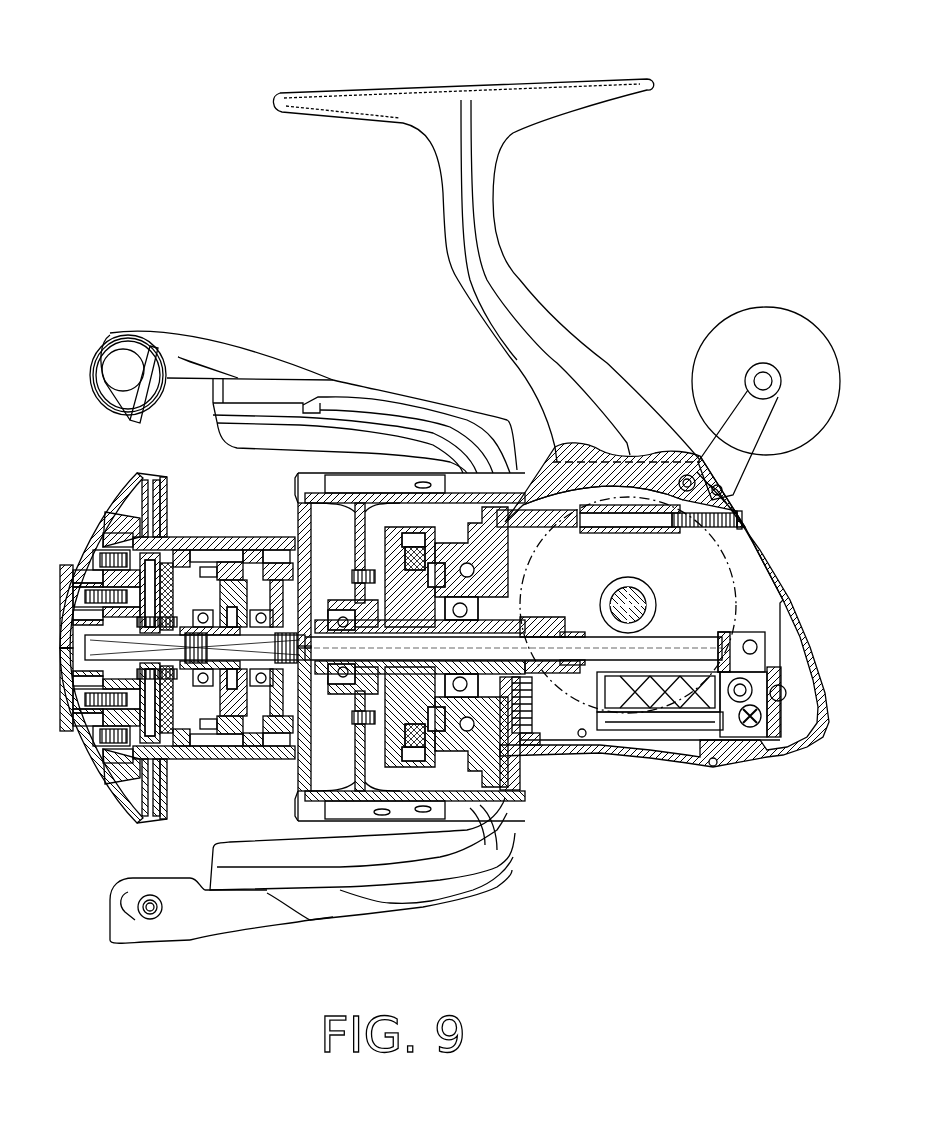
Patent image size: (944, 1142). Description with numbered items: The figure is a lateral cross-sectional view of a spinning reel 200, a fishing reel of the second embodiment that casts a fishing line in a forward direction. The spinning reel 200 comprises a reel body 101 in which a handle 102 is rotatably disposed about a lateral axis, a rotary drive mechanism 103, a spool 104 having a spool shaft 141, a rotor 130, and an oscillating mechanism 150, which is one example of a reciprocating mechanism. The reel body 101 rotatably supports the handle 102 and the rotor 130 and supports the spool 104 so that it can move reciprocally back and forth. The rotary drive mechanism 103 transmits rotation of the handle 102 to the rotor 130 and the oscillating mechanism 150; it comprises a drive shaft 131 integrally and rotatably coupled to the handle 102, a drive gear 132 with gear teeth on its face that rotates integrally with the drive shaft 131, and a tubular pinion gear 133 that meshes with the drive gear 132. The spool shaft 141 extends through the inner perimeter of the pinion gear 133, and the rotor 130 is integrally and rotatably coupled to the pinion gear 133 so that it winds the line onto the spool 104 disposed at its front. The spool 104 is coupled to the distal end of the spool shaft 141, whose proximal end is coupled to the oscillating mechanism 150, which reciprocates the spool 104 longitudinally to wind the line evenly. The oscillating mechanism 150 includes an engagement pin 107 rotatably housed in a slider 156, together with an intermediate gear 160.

The spinning reel 200 is at (205, 172).
The reel body 101 is at (571, 286).
The handle 102 is at (768, 296).
The rotary drive mechanism 103 is at (686, 609).
The spool 104 is at (222, 515).
The engagement pin 107 is at (718, 658).
The rotor 130 is at (390, 375).
The drive shaft 131 is at (617, 585).
The drive gear 132 is at (625, 453).
The pinion gear 133 is at (549, 611).
The spool shaft 141 is at (667, 650).
The oscillating mechanism 150 is at (713, 724).
The slider 156 is at (745, 727).
The intermediate gear 160 is at (530, 757).